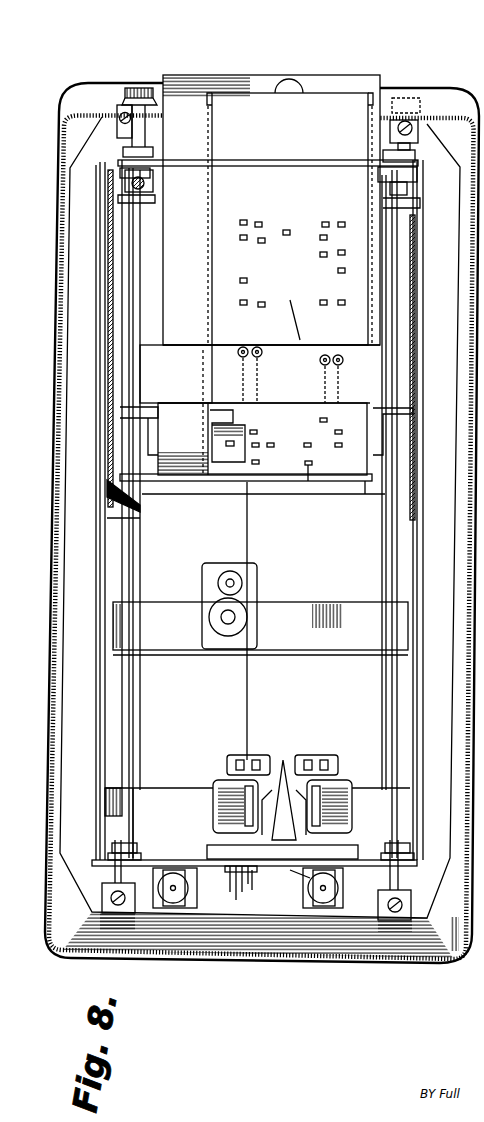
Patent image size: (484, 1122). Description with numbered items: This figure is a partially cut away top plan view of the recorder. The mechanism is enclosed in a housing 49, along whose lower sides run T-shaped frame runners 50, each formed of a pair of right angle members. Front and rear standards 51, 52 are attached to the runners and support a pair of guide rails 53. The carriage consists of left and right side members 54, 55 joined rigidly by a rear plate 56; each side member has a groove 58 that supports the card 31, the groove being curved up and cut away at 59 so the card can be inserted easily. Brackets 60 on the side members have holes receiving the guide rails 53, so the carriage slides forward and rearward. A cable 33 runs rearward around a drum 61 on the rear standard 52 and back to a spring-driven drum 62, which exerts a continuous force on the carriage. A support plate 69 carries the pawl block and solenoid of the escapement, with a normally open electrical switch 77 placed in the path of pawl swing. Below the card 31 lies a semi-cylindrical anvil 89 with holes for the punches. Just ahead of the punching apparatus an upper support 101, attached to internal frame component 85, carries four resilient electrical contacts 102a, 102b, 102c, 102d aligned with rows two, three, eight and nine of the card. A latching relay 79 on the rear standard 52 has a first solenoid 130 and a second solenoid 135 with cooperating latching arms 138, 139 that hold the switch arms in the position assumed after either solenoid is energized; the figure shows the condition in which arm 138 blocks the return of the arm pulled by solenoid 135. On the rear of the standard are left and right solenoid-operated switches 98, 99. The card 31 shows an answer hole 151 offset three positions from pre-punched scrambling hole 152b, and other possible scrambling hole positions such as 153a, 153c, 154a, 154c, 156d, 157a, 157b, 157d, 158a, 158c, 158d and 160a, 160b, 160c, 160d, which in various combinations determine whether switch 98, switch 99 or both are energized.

The housing 49 is at (44, 492).
The frame runners 50 is at (94, 706).
The front standard 51 is at (287, 148).
The rear standard 52 is at (173, 847).
The guide rails 53 is at (133, 664).
The left side member 54 is at (370, 250).
The right side member 55 is at (150, 290).
The rear plate 56 is at (235, 482).
The groove 58 is at (321, 86).
The cut away 59 is at (216, 107).
The brackets 60 is at (156, 200).
The drum 61 is at (260, 892).
The spring-driven drum 62 is at (190, 600).
The support plate 69 is at (365, 494).
The electrical switch 77 is at (200, 380).
The latching relay 79 is at (292, 775).
The internal frame component 85 is at (112, 500).
The anvil 89 is at (212, 445).
The left solenoid-operated switch 98 is at (296, 880).
The right solenoid-operated switch 99 is at (178, 904).
The upper support 101 is at (300, 320).
The resilient electrical contact 102a is at (350, 405).
The resilient electrical contact 102b is at (326, 386).
The resilient electrical contact 102c is at (250, 402).
The resilient electrical contact 102d is at (238, 379).
The first solenoid 130 is at (213, 793).
The second solenoid 135 is at (340, 805).
The latching arm 138 is at (262, 752).
The latching arm 139 is at (280, 748).
The hole 151 is at (308, 481).
The scrambling hole 152b is at (312, 418).
The contact 153a is at (349, 318).
The scrambling hole 153c is at (272, 322).
The contact 154a is at (322, 318).
The scrambling hole 154c is at (233, 308).
The scrambling hole 156d is at (230, 271).
The scrambling hole 157a is at (348, 268).
The scrambling hole 157b is at (331, 248).
The contact 157d is at (316, 254).
The scrambling hole 158a is at (353, 229).
The scrambling hole 158c is at (268, 255).
The scrambling hole 158d is at (241, 256).
The scrambling hole 160a is at (344, 203).
The scrambling hole 160b is at (323, 205).
The scrambling hole 160c is at (264, 204).
The scrambling hole 160d is at (239, 202).
The card 31 is at (287, 212).
The cable 33 is at (248, 548).